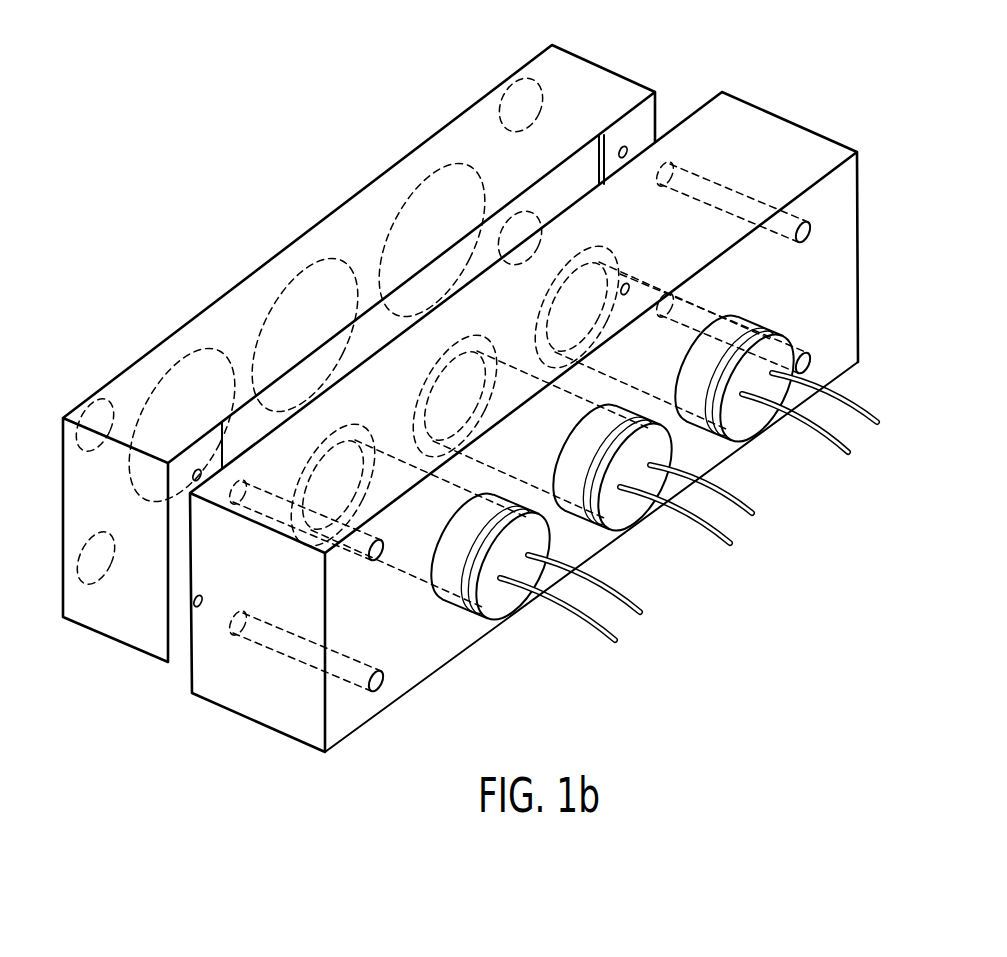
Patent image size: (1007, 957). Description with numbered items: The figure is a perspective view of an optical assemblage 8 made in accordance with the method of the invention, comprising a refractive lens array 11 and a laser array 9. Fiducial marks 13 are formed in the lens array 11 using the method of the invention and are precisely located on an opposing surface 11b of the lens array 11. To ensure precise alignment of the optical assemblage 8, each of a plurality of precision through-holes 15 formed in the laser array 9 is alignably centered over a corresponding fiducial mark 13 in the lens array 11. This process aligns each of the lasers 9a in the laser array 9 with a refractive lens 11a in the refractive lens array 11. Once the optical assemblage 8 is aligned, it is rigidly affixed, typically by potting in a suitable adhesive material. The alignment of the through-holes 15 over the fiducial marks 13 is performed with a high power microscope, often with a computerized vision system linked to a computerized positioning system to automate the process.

The optical assemblage 8 is at (481, 381).
The laser array 9 is at (533, 422).
The lasers 9a is at (750, 428).
The refractive lens array 11 is at (365, 344).
The refractive lens 11a is at (416, 162).
The opposing surface 11b is at (633, 117).
The fiducial marks 13 is at (630, 145).
The precision through-holes 15 is at (808, 228).